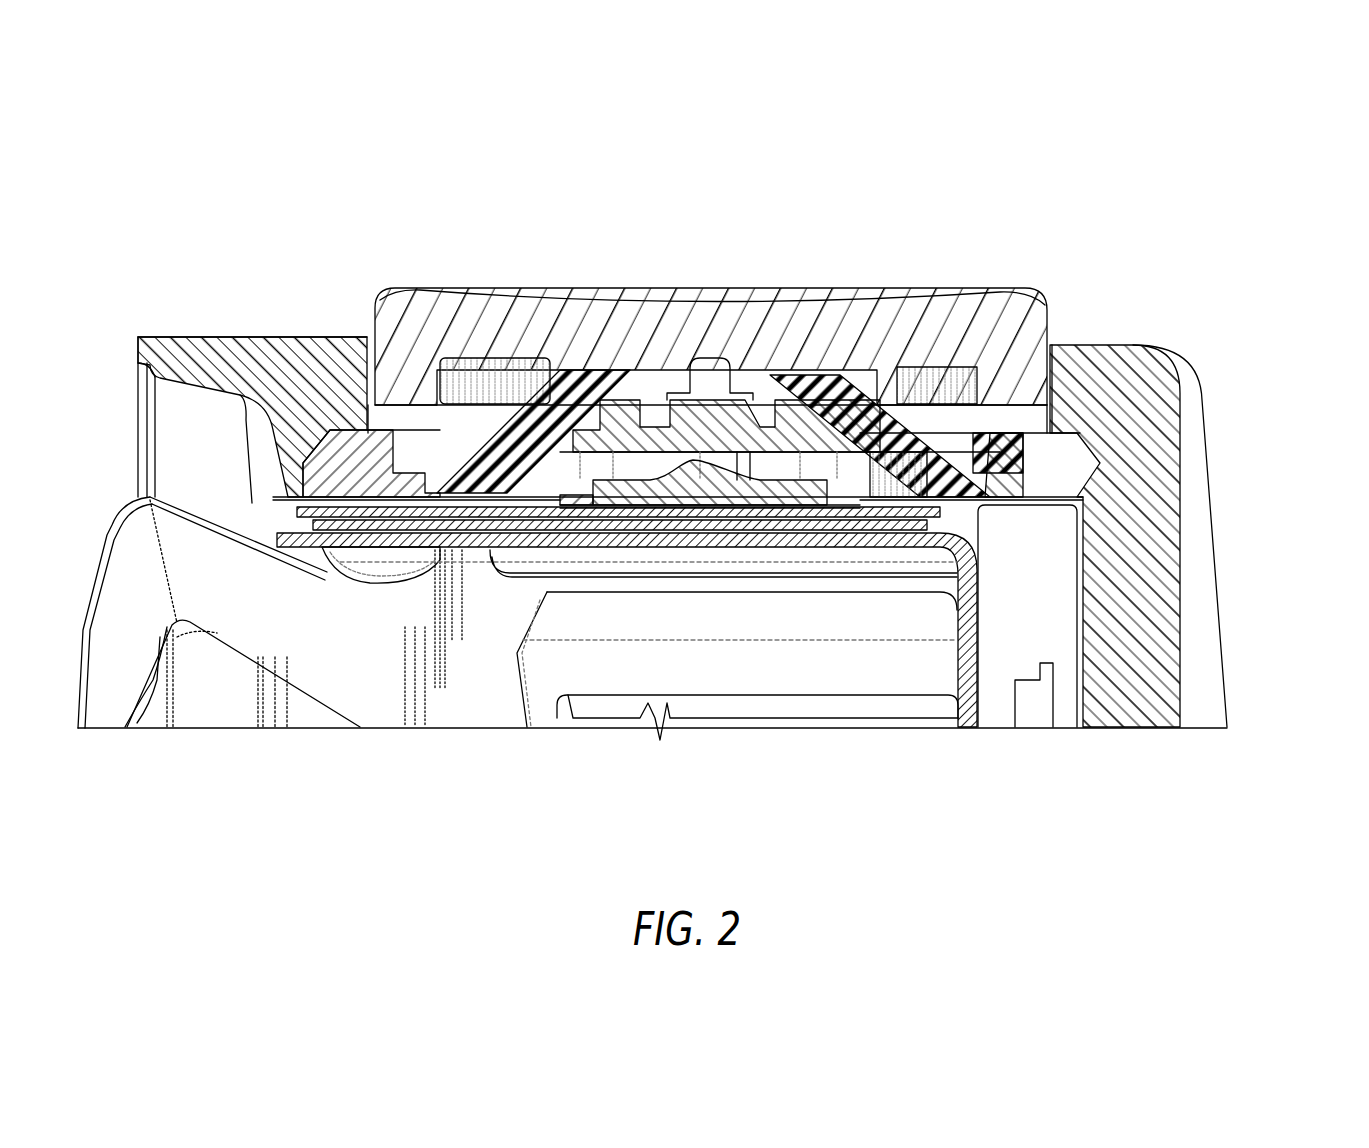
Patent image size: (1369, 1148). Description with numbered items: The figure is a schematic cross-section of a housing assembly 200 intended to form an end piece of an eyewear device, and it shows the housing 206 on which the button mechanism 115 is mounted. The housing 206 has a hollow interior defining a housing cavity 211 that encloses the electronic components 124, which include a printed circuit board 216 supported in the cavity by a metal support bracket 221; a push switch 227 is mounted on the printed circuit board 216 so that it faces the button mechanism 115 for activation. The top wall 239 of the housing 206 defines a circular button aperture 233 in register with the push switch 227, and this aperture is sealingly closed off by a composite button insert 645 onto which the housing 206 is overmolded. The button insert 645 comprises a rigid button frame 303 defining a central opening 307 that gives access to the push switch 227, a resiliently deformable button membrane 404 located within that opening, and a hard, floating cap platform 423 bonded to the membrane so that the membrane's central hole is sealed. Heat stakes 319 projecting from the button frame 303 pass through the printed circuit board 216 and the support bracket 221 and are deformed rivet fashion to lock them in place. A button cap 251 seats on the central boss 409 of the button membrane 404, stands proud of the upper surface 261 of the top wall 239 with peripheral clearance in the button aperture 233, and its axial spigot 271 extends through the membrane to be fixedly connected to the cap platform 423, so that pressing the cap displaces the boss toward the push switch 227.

The housing assembly 200 is at (1083, 148).
The button mechanism 115 is at (754, 232).
The button cap 251 is at (668, 330).
The central boss 409 is at (828, 390).
The button insert 645 is at (960, 392).
The central opening 307 is at (1027, 453).
The button frame 303 is at (1056, 482).
The housing 206 is at (1128, 650).
The metal support bracket 221 is at (875, 541).
The push switch 227 is at (695, 497).
The printed circuit board 216 is at (578, 513).
The electronic components 124 is at (483, 560).
The housing cavity 211 is at (397, 664).
The heat stakes 319 is at (357, 563).
The top wall 239 is at (307, 392).
The upper surface 261 is at (266, 338).
The button aperture 233 is at (367, 350).
The button membrane 404 is at (472, 430).
The spigot 271 is at (633, 395).
The cap platform 423 is at (752, 427).